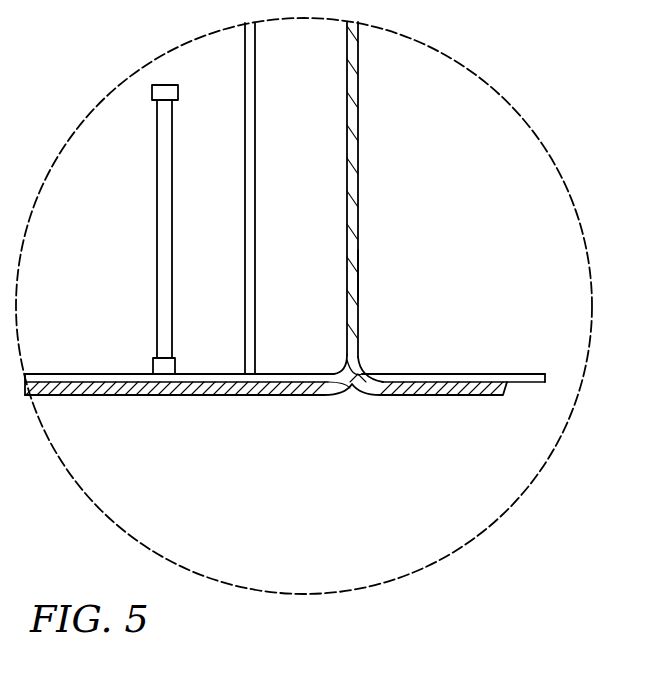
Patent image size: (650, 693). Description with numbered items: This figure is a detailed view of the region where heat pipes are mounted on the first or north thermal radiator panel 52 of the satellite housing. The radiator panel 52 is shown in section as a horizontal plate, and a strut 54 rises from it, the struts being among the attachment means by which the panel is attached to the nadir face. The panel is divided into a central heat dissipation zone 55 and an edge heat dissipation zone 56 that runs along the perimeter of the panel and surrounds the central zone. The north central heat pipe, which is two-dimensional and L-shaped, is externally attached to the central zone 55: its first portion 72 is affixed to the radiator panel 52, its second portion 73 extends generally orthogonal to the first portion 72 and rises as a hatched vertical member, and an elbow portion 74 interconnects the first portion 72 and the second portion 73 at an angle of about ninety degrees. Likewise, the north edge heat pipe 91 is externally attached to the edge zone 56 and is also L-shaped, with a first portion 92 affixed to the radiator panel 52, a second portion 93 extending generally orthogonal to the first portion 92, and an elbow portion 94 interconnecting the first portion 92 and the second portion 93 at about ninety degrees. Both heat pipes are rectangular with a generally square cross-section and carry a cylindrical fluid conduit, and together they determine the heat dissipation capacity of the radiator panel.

The north thermal radiator panel 52 is at (122, 373).
The strut 54 is at (157, 274).
The central heat dissipation zone 55 is at (88, 373).
The edge heat dissipation zone 56 is at (485, 373).
The first portion 72 is at (262, 396).
The second portion 73 is at (358, 325).
The elbow portion 74 is at (350, 385).
The north edge heat pipe 91 is at (417, 396).
The first portion 92 is at (402, 396).
The second portion 93 is at (358, 272).
The elbow portion 94 is at (368, 374).